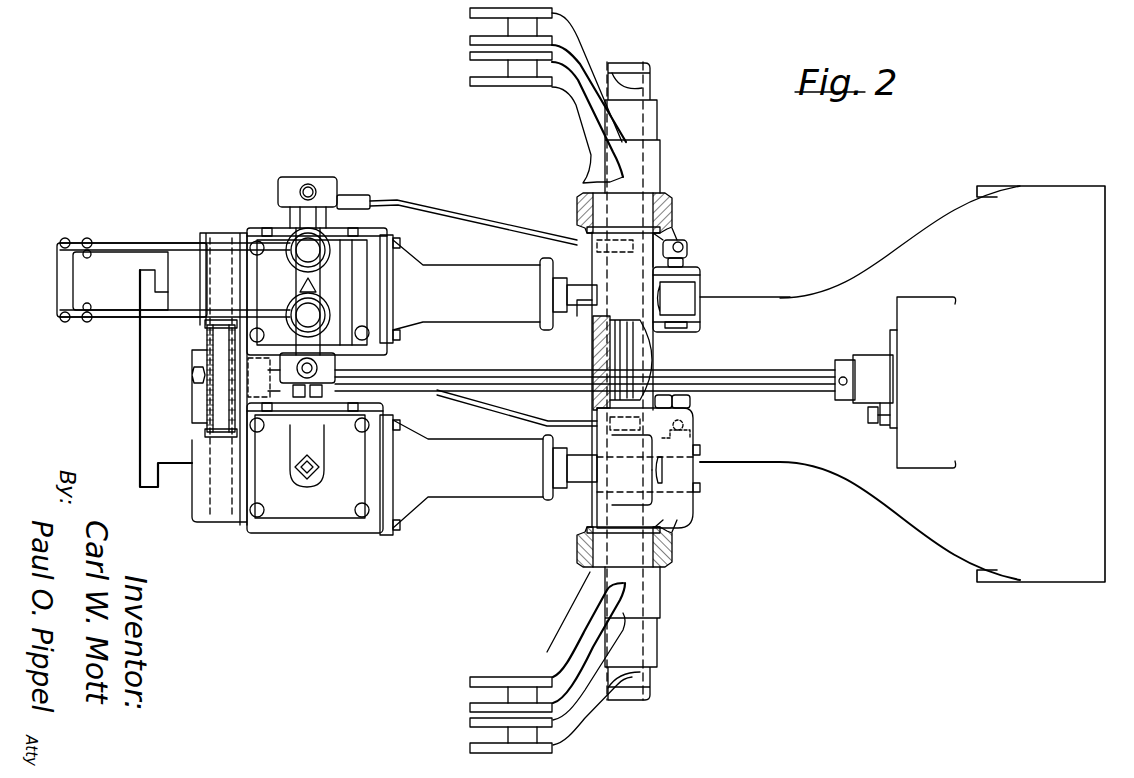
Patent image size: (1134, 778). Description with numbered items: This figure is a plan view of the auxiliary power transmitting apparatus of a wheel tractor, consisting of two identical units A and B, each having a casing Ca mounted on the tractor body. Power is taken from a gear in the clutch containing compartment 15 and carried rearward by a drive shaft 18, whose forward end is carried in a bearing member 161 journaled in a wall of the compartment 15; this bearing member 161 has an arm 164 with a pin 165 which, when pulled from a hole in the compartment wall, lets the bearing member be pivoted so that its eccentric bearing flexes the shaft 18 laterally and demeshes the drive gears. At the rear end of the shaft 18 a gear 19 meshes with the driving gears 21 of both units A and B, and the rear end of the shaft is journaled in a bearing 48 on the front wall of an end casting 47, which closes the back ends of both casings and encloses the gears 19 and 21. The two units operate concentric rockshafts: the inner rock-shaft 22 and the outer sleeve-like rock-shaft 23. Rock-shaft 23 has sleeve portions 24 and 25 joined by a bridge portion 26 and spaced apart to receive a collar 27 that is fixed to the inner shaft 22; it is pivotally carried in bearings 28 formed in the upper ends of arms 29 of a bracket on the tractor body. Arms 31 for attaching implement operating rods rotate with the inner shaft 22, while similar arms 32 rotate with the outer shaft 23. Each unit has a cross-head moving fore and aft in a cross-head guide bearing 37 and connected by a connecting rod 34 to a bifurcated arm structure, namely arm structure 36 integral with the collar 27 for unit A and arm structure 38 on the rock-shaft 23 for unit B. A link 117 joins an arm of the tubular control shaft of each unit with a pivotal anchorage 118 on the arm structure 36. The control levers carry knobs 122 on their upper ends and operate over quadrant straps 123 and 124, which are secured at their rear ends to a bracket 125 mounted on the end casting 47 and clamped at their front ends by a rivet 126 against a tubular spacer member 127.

The clutch containing compartment 15 is at (925, 302).
The drive shaft 18 is at (773, 369).
The gear 19 is at (206, 352).
The driving gears 21 is at (210, 332).
The inner rockshaft 22 is at (615, 353).
The outer rockshaft 23 is at (662, 360).
The sleeve portion 24 is at (598, 405).
The sleeve portion 25 is at (590, 513).
The bridge portion 26 is at (698, 514).
The collar 27 is at (590, 490).
The bearings 28 is at (578, 206).
The bracket arms 29 is at (672, 226).
The rock-shaft arms 31 is at (573, 40).
The rock-shaft arms 32 is at (548, 110).
The connecting rod 34 is at (583, 302).
The bifurcated arm structure 36 is at (700, 480).
The cross-head guide bearing 37 is at (476, 265).
The bifurcated arm structure 38 is at (700, 276).
The end casting 47 is at (228, 523).
The bearing 48 is at (262, 364).
The link 117 is at (505, 222).
The pivotal anchorage 118 is at (690, 253).
The knobs 122 is at (297, 312).
The quadrant strap 123 is at (150, 241).
The quadrant strap 124 is at (128, 319).
The bracket 125 is at (68, 280).
The rivet 126 is at (364, 330).
The tubular spacer member 127 is at (365, 282).
The bearing member 161 is at (870, 356).
The arm 164 is at (886, 432).
The pin 165 is at (868, 416).
The power transmitting unit A is at (381, 538).
The power transmitting unit B is at (409, 246).
The casing Ca is at (272, 240).